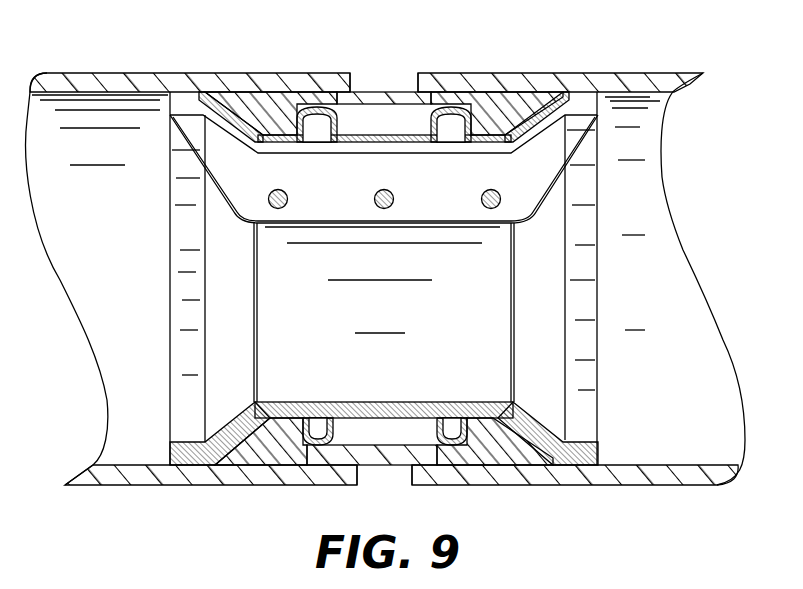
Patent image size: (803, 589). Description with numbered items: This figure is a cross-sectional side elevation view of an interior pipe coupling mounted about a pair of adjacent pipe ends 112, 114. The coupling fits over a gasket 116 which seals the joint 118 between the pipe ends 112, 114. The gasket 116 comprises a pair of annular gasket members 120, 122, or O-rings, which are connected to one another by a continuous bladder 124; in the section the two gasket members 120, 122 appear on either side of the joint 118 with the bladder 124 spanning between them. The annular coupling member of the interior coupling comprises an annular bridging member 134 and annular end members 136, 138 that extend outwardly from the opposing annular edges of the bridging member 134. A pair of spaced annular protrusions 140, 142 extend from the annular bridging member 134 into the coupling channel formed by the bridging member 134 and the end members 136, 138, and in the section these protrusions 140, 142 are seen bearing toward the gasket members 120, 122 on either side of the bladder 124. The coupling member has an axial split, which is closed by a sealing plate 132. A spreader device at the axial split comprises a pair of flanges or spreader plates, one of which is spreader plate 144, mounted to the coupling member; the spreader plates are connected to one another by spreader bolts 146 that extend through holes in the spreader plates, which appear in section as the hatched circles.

The pipe end 112 is at (128, 209).
The pipe end 114 is at (688, 416).
The gasket 116 is at (388, 92).
The joint 118 is at (420, 70).
The annular gasket member 120 is at (262, 103).
The annular gasket member 122 is at (507, 100).
The continuous bladder 124 is at (360, 104).
The sealing plate 132 is at (555, 117).
The annular bridging member 134 is at (400, 154).
The annular end member 136 is at (233, 133).
The annular end member 138 is at (537, 133).
The annular protrusion 140 is at (315, 428).
The annular protrusion 142 is at (452, 430).
The spreader plate 144 is at (467, 184).
The spreader bolt 146 is at (374, 197).